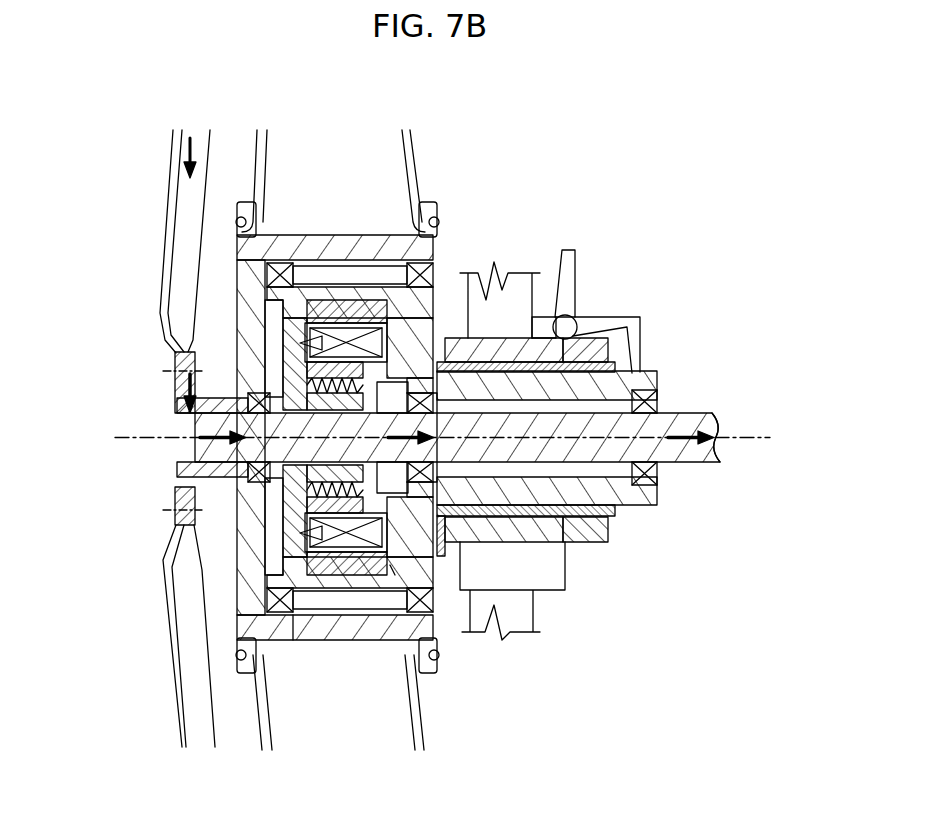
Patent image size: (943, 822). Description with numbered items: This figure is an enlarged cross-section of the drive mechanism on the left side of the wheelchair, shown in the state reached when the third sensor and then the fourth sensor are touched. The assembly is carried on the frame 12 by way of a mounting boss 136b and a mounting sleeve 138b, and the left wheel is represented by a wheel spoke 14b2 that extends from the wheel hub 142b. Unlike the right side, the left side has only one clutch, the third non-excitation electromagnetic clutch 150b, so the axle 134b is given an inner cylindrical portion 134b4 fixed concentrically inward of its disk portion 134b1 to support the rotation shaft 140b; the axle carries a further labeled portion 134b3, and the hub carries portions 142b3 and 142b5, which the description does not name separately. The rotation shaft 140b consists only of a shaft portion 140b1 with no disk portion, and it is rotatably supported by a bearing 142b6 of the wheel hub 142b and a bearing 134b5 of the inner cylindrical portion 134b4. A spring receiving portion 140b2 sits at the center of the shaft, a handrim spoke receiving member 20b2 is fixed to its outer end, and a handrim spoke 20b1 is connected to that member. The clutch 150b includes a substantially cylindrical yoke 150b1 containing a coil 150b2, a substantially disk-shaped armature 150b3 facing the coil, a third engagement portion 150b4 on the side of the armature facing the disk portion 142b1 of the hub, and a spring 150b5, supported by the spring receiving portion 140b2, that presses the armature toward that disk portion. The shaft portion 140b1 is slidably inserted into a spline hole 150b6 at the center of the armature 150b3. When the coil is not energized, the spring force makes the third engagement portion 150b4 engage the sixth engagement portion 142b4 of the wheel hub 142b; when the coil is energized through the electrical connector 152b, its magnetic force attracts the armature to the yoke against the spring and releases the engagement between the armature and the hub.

The frame 12 is at (512, 285).
The wheel spoke 14b2 is at (410, 215).
The handrim spoke 20b1 is at (170, 200).
The handrim spoke receiving member 20b2 is at (176, 398).
The axle 134b is at (424, 322).
The disk portion 134b1 is at (438, 570).
The housing third portion 134b3 is at (392, 585).
The inner cylindrical portion 134b4 is at (604, 498).
The bearing 134b5 is at (612, 362).
The mounting boss 136b is at (542, 330).
The mounting sleeve 138b is at (582, 305).
The rotation shaft 140b is at (702, 400).
The shaft portion 140b1 is at (700, 413).
The spring receiving portion 140b2 is at (346, 262).
The wheel hub 142b is at (266, 678).
The disk portion 142b1 is at (192, 500).
The motor housing third portion 142b3 is at (300, 233).
The sixth engagement portion 142b4 is at (262, 562).
The motor housing fifth portion 142b5 is at (260, 210).
The bearing 142b6 is at (188, 472).
The third non-excitation electromagnetic clutch 150b is at (358, 565).
The yoke 150b1 is at (300, 620).
The coil 150b2 is at (310, 540).
The armature 150b3 is at (305, 497).
The third engagement portion 150b4 is at (300, 585).
The spring 150b5 is at (288, 378).
The spline hole 150b6 is at (293, 655).
The electrical connector 152b is at (548, 575).